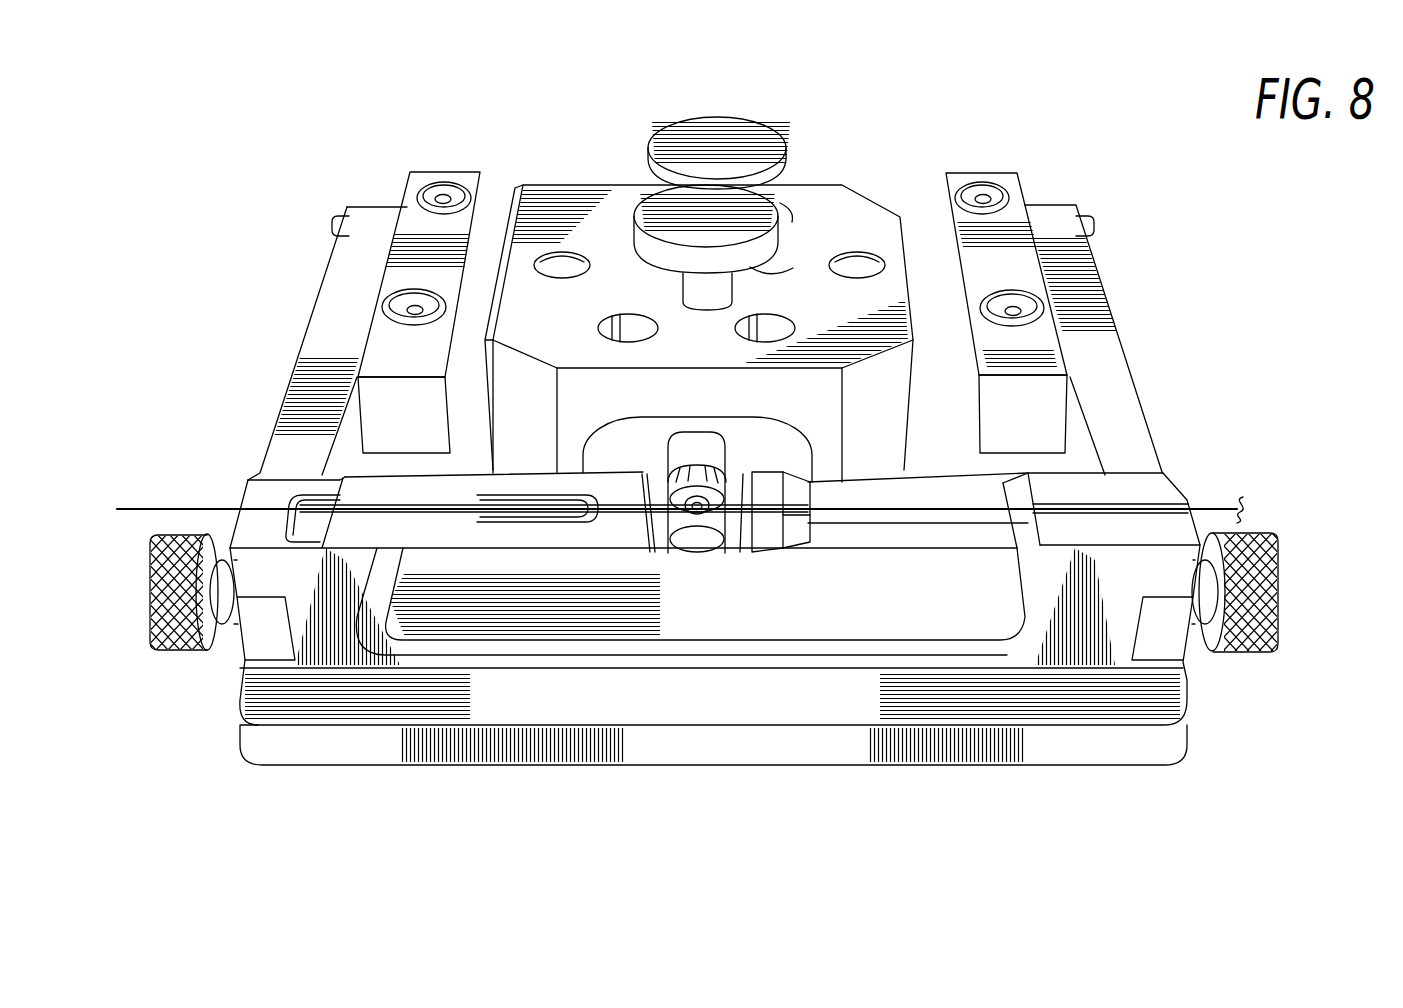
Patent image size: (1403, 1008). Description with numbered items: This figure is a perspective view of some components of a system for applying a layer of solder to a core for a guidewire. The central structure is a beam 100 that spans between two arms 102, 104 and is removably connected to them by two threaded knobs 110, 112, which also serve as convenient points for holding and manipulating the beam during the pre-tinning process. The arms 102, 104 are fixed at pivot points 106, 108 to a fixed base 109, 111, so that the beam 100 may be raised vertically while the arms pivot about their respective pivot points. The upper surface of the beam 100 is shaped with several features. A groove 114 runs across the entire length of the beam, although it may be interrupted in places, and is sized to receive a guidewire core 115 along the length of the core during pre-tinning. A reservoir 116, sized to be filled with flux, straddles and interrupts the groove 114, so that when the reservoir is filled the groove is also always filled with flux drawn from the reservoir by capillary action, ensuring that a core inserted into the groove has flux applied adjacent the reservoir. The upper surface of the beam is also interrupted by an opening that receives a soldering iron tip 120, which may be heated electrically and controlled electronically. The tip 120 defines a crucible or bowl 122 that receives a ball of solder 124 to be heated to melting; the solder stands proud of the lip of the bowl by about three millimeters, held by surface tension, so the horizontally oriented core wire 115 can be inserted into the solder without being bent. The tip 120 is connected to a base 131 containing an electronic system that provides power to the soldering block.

The beam 100 is at (1168, 482).
The arm 102 is at (1117, 400).
The arm 104 is at (318, 393).
The pivot point 106 is at (1096, 227).
The pivot point 108 is at (332, 227).
The fixed base 109 is at (1003, 245).
The threaded knob 110 is at (1258, 603).
The fixed base 111 is at (423, 232).
The threaded knob 112 is at (177, 632).
The groove 114 is at (418, 515).
The guidewire core 115 is at (197, 507).
The reservoir 116 is at (528, 522).
The soldering iron tip 120 is at (677, 457).
The crucible or bowl 122 is at (697, 515).
The ball of solder 124 is at (697, 515).
The base 131 is at (813, 293).